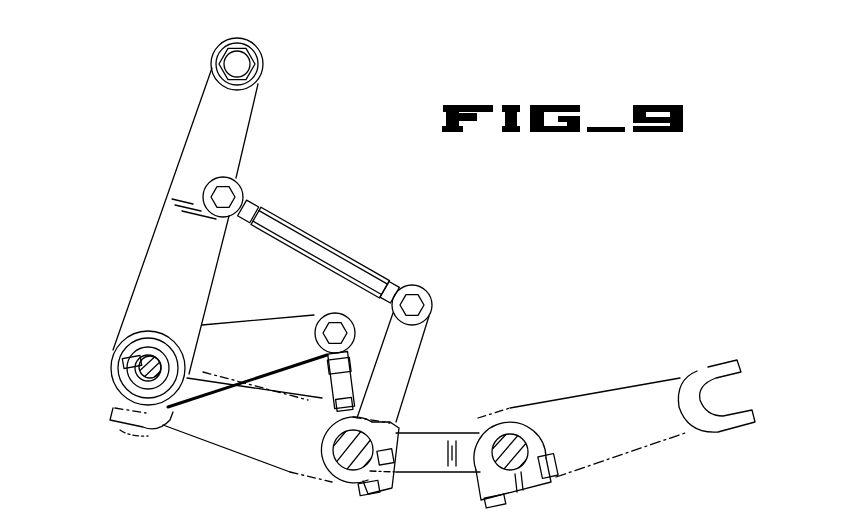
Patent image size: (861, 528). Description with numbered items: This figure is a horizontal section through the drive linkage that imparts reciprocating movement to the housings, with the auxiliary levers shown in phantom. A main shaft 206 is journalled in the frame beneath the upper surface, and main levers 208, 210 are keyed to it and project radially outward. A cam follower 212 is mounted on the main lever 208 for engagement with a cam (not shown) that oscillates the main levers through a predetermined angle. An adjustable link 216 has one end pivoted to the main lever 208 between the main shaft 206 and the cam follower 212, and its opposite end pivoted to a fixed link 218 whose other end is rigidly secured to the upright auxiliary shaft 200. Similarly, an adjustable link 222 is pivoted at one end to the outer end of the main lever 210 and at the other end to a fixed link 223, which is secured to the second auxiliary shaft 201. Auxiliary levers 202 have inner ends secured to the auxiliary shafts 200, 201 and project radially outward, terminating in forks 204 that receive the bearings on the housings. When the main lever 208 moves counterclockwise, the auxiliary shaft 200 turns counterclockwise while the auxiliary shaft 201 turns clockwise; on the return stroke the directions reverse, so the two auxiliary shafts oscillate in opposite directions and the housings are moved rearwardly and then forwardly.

The auxiliary shaft 200 is at (347, 463).
The auxiliary shaft 201 is at (510, 433).
The auxiliary lever 202 is at (257, 463).
The fork 204 is at (110, 420).
The main shaft 206 is at (136, 380).
The main lever 208 is at (238, 112).
The main lever 210 is at (252, 328).
The cam follower 212 is at (259, 55).
The adjustable link 216 is at (300, 226).
The fixed link 218 is at (412, 336).
The adjustable link 222 is at (333, 400).
The fixed link 223 is at (432, 465).